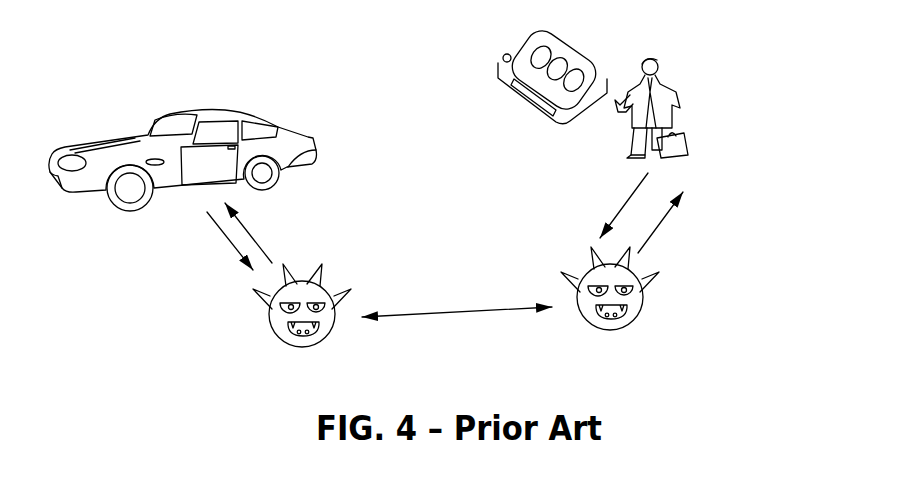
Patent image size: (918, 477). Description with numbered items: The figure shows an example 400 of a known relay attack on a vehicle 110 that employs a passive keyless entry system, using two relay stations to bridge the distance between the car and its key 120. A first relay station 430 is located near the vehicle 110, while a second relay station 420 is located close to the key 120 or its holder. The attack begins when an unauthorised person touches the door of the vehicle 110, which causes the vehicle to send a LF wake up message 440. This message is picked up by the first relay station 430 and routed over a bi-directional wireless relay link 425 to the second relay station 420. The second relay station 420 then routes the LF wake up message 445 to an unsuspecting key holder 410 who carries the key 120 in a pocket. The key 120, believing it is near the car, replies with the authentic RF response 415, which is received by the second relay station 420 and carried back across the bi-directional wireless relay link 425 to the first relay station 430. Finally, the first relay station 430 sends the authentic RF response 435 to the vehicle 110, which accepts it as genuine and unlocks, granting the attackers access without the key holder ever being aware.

The example of a known relay attack 400 is at (168, 68).
The vehicle 110 is at (148, 122).
The key 120 is at (498, 60).
The unsuspecting key holder 410 is at (647, 45).
The authentic RF response 415 is at (621, 203).
The second relay station 420 is at (585, 262).
The bi-directional wireless relay link 425 is at (460, 318).
The first relay station 430 is at (266, 332).
The authentic RF response 435 is at (251, 231).
The LF wake up message 440 is at (227, 248).
The LF wake up message 445 is at (670, 218).